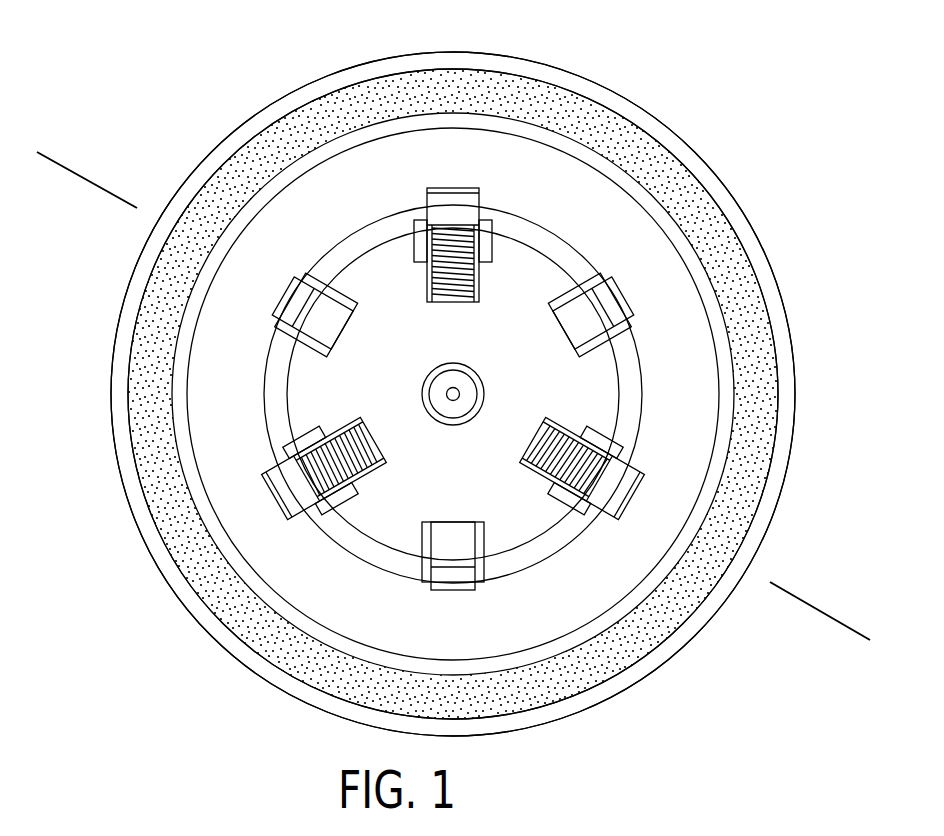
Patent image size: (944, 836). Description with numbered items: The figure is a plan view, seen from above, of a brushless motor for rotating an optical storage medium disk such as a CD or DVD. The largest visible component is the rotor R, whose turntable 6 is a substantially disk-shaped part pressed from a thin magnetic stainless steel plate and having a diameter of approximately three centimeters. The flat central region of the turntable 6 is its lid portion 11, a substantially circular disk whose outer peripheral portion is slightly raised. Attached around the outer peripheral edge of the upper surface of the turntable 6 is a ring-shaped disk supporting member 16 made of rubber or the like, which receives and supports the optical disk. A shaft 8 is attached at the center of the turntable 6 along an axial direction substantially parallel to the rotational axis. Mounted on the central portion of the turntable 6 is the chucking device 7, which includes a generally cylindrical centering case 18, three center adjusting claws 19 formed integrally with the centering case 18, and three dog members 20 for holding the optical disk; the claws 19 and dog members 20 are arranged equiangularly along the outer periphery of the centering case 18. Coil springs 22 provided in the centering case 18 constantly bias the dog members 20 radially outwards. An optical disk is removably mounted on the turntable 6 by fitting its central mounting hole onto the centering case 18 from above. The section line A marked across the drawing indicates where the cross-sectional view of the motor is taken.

The turntable 6 is at (765, 250).
The chucking device 7 is at (522, 230).
The shaft 8 is at (452, 382).
The lid portion 11 is at (585, 598).
The disk supporting member 16 is at (332, 95).
The centering case 18 is at (627, 370).
The center adjusting claws 19 is at (292, 300).
The dog members 20 is at (450, 207).
The coil springs 22 is at (430, 286).
The rotor R is at (683, 75).
The line A- A is at (83, 180).